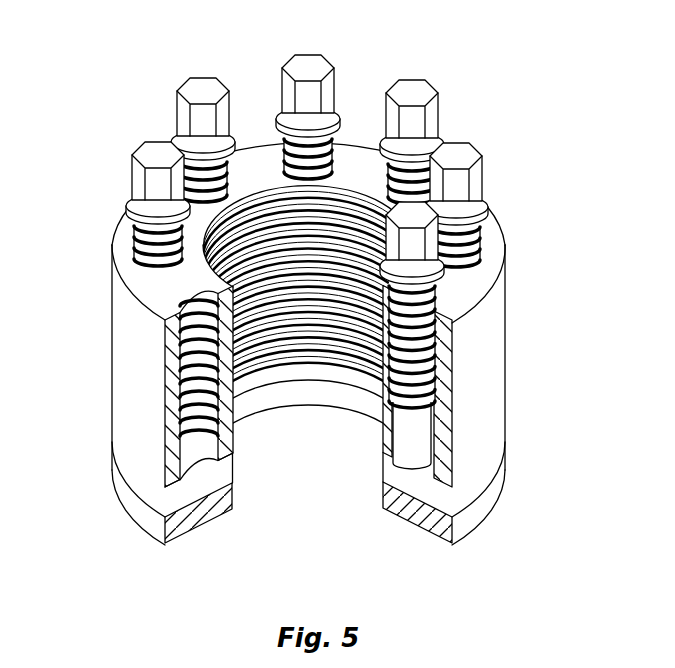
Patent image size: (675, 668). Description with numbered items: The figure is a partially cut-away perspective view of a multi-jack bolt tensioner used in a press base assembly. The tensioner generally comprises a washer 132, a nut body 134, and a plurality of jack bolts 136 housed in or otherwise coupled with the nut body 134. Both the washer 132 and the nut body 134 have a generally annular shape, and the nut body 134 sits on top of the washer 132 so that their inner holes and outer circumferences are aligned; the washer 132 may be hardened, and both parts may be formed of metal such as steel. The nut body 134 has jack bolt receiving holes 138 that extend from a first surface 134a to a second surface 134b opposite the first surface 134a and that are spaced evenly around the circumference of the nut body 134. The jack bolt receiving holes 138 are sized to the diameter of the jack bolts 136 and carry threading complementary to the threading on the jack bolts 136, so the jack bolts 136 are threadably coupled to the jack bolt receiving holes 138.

The washer 132 is at (450, 502).
The nut body 134 is at (128, 352).
The first surface 134a is at (145, 277).
The second surface 134b is at (143, 477).
The jack bolts 136 is at (158, 153).
The jack bolt receiving holes 138 is at (227, 457).